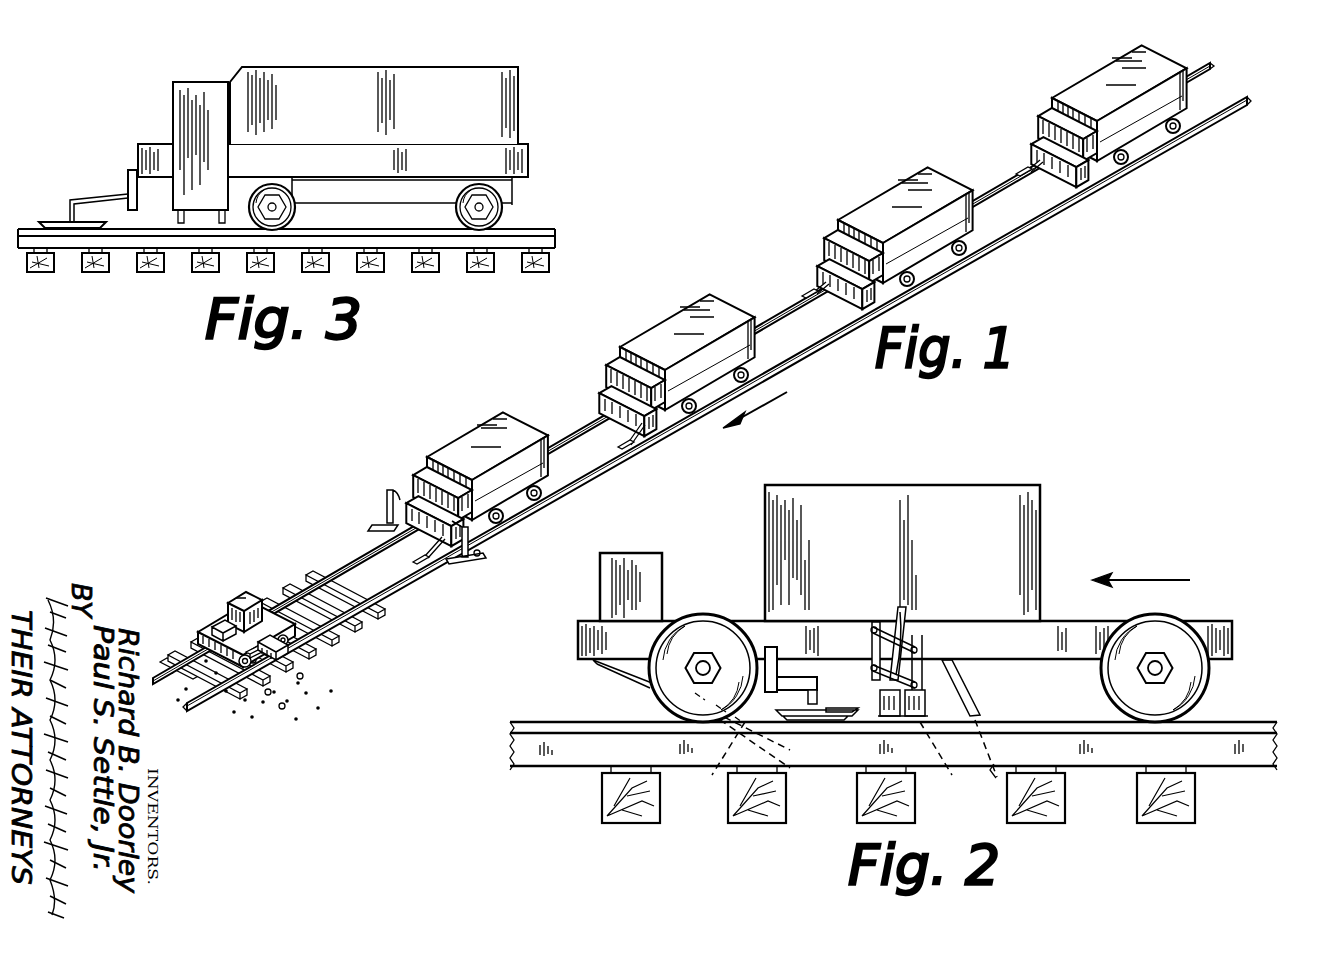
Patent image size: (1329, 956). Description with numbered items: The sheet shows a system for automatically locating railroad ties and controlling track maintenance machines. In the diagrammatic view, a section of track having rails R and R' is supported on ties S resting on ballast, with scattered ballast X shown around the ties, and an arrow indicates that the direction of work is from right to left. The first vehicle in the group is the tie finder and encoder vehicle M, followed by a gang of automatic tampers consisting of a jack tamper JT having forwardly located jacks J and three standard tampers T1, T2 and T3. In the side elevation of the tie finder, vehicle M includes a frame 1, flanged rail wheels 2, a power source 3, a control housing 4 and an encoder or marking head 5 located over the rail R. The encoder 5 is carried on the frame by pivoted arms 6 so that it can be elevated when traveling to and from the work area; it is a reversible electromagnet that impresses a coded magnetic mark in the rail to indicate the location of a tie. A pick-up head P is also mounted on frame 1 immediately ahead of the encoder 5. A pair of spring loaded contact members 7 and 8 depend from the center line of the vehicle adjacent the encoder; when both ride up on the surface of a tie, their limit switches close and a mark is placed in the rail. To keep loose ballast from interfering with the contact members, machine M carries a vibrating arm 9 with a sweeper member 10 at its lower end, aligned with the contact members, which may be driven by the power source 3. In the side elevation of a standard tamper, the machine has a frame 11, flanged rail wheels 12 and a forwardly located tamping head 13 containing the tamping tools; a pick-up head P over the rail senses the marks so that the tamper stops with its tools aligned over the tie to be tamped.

In FIG. 2, the frame 1 is at (578, 634).
In FIG. 2, the flanged rail wheels 2 is at (655, 700).
In FIG. 1, the power source 3 is at (246, 594).
In FIG. 2, the power source 3 is at (1040, 497).
In FIG. 1, the control housing 4 is at (218, 622).
In FIG. 2, the control housing 4 is at (662, 561).
In FIG. 1, the encoder or marking head 5 is at (292, 652).
In FIG. 2, the encoder or marking head 5 is at (880, 683).
In FIG. 2, the pivoted arms 6 is at (904, 635).
In FIG. 2, the spring loaded contact member 7 is at (950, 775).
In FIG. 2, the spring loaded contact member 8 is at (996, 779).
In FIG. 2, the vibrating arm 9 is at (608, 668).
In FIG. 2, the sweeper member 10 is at (725, 746).
In FIG. 3, the frame 11 is at (528, 158).
In FIG. 3, the flanged rail wheel 12 is at (296, 208).
In FIG. 3, the tamping head 13 is at (178, 100).
In FIG. 1, the tamping head 13 is at (604, 360).
In FIG. 3, the pick-up head P is at (50, 218).
In FIG. 1, the pick-up head P is at (630, 447).
In FIG. 2, the pick-up head P is at (843, 722).
In FIG. 3, the rail R is at (310, 235).
In FIG. 1, the rail R is at (717, 417).
In FIG. 2, the rail R is at (867, 746).
In FIG. 1, the rail R' is at (683, 373).
In FIG. 3, the ties S is at (92, 272).
In FIG. 1, the ties S is at (378, 617).
In FIG. 2, the ties S is at (600, 796).
In FIG. 1, the ballast X is at (271, 694).
In FIG. 1, the tie finder and encoder vehicle M is at (208, 626).
In FIG. 1, the jacks J is at (386, 496).
In FIG. 1, the junction train car JT is at (484, 418).
In FIG. 1, the standard tamper T1 is at (690, 310).
In FIG. 1, the standard tamper T2 is at (896, 188).
In FIG. 1, the standard tamper T3 is at (1106, 70).